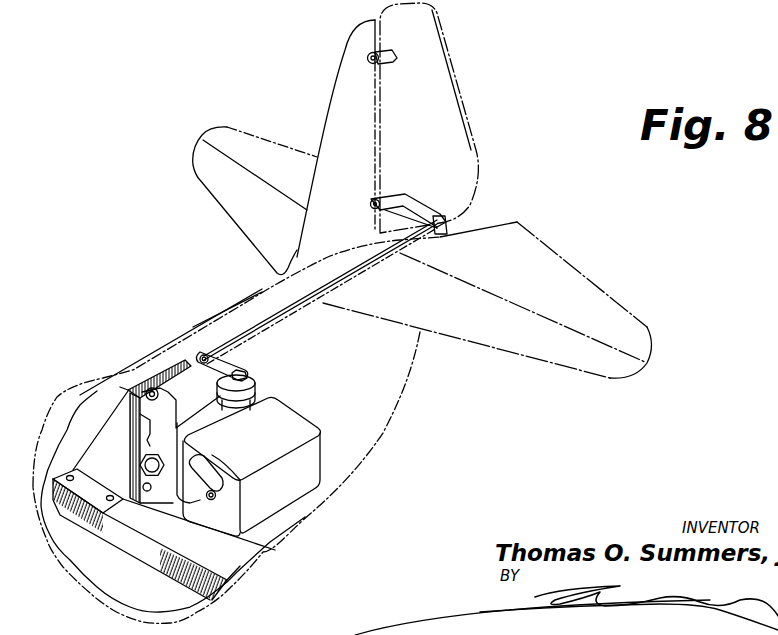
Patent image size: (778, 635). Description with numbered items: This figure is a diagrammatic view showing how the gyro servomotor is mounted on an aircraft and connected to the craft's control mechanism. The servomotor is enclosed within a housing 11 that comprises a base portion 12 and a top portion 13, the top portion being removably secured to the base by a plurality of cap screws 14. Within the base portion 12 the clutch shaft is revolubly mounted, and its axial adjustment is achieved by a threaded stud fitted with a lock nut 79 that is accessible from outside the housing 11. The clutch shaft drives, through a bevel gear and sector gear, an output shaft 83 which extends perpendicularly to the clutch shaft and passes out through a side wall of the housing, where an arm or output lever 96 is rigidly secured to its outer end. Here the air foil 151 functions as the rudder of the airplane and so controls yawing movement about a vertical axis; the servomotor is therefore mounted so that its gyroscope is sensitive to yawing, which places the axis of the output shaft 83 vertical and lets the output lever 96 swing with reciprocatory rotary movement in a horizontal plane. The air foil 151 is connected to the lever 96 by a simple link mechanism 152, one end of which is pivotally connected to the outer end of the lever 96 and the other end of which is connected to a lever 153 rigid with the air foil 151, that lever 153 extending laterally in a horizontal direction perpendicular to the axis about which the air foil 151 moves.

The housing 11 is at (298, 409).
The base portion 12 is at (265, 392).
The top portion 13 is at (313, 463).
The cap screws 14 is at (147, 425).
The lock nut 79 is at (140, 465).
The output shaft 83 is at (247, 372).
The output lever 96 is at (246, 357).
The air foil 151 is at (447, 87).
The link mechanism 152 is at (260, 318).
The lever 153 is at (410, 200).